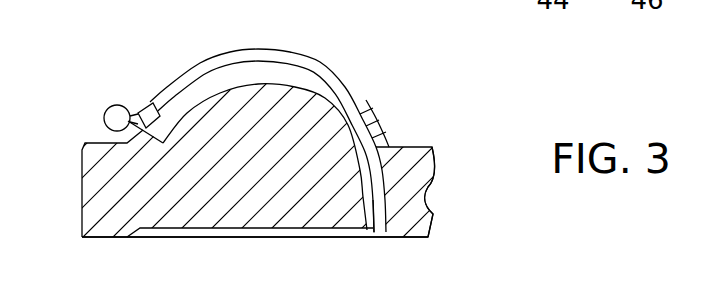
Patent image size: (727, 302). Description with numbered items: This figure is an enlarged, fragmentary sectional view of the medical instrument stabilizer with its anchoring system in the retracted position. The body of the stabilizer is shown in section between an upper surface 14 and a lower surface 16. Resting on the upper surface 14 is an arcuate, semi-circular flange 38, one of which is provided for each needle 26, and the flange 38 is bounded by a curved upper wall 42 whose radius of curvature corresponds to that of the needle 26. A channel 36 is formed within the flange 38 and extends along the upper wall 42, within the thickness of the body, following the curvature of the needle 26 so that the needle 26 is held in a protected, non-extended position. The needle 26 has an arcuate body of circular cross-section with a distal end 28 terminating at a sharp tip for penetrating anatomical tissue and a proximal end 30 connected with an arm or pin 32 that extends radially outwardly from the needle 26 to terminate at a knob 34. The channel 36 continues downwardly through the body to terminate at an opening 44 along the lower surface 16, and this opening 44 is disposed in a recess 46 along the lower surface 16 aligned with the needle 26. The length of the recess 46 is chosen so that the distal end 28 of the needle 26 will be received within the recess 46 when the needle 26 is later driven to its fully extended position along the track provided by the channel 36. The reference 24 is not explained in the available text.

The upper surface 14 is at (420, 147).
The lower surface 16 is at (125, 238).
The arcuate band 24 is at (243, 47).
The needle 26 is at (328, 151).
The distal end 28 is at (395, 209).
The proximal end 30 is at (150, 105).
The arm or pin 32 is at (125, 146).
The knob 34 is at (117, 117).
The channel 36 is at (181, 88).
The flange 38 is at (372, 119).
The upper wall 42 is at (346, 80).
The opening 44 is at (365, 211).
The recess 46 is at (258, 234).